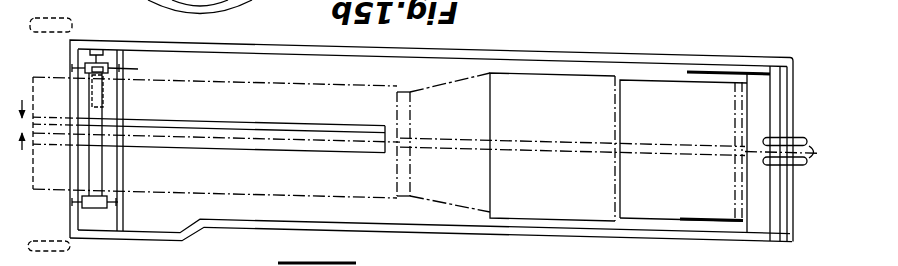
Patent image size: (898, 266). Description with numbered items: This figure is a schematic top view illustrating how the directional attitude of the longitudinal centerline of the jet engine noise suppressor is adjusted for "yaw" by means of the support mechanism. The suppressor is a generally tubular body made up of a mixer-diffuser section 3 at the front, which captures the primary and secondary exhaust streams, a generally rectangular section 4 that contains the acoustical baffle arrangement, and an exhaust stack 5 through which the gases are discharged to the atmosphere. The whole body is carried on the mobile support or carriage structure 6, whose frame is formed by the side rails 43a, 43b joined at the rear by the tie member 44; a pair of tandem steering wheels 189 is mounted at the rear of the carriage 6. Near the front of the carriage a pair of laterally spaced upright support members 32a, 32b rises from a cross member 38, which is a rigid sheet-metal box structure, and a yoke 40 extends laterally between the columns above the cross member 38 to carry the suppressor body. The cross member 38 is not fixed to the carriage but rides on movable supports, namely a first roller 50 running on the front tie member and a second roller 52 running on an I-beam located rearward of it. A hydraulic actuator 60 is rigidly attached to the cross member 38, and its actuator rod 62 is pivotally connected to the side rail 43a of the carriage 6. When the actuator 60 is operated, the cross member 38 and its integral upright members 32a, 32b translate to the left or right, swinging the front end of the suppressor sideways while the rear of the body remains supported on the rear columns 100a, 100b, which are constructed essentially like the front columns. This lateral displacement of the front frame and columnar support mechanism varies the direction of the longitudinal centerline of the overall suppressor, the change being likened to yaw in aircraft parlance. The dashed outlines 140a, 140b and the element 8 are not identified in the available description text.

The mixer-diffuser section 3 is at (409, 87).
The generally rectangular section 4 is at (558, 120).
The exhaust stack 5 is at (686, 126).
The mobile support or carriage structure 6 is at (643, 46).
The bore 8 is at (331, 83).
The upright support member 32a is at (109, 61).
The upright support member 32b is at (100, 212).
The cross member 38 is at (106, 155).
The yoke 40 is at (109, 171).
The side rail 43a is at (490, 50).
The side rail 43b is at (474, 236).
The tie member 44 is at (794, 110).
The roller 50 is at (73, 68).
The roller 52 is at (137, 68).
The hydraulic actuator 60 is at (108, 92).
The actuator rod 62 is at (97, 50).
The column 100a is at (760, 68).
The column 100b is at (760, 233).
The upper mounting flange 140a is at (58, 18).
The lower mounting flange 140b is at (49, 253).
The steering wheel 189 is at (808, 141).